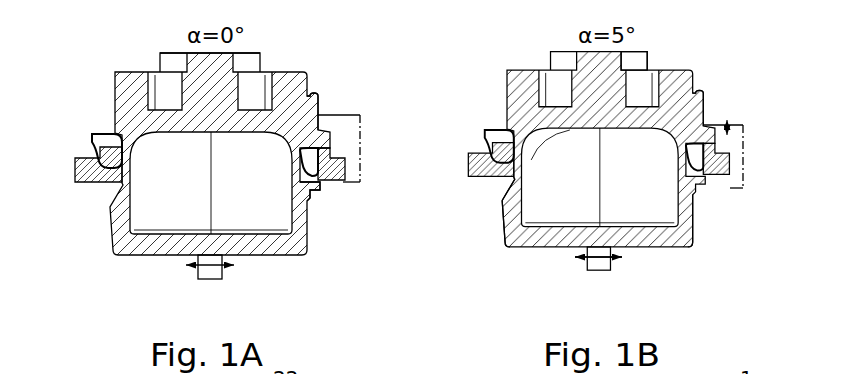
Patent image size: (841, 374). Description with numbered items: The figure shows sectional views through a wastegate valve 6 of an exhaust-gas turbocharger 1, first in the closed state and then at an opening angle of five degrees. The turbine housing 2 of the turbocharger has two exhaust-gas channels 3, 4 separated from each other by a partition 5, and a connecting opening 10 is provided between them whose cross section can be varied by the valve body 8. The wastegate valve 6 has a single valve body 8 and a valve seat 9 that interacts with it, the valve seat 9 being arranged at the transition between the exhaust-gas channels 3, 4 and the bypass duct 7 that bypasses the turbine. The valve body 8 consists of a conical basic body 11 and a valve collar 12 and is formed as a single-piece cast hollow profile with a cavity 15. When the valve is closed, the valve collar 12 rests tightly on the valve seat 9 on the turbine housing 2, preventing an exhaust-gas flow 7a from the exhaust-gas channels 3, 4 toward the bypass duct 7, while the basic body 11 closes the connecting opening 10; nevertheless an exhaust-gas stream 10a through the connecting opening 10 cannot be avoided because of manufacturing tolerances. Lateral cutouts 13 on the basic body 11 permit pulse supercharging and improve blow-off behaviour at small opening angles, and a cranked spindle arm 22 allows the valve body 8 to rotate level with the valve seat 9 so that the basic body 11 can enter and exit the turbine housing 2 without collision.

In FIG. 1A, the exhaust-gas turbocharger 1 is at (324, 80).
In FIG. 1B, the exhaust-gas turbocharger 1 is at (704, 62).
In FIG. 1A, the turbine housing 2 is at (76, 172).
In FIG. 1B, the turbine housing 2 is at (718, 174).
In FIG. 1A, the exhaust-gas channel 3 is at (125, 303).
In FIG. 1B, the exhaust-gas channel 3 is at (538, 283).
In FIG. 1A, the exhaust-gas channel 4 is at (296, 306).
In FIG. 1B, the exhaust-gas channel 4 is at (668, 283).
In FIG. 1A, the partition 5 is at (213, 273).
In FIG. 1B, the partition 5 is at (597, 277).
In FIG. 1A, the wastegate valve 6 is at (105, 107).
In FIG. 1B, the wastegate valve 6 is at (493, 107).
In FIG. 1A, the bypass duct 7 is at (349, 113).
In FIG. 1B, the bypass duct 7 is at (736, 124).
In FIG. 1B, the exhaust-gas flow 7a is at (728, 128).
In FIG. 1A, the valve body 8 is at (290, 69).
In FIG. 1B, the valve body 8 is at (497, 233).
In FIG. 1A, the valve seat 9 is at (92, 134).
In FIG. 1B, the valve seat 9 is at (692, 157).
In FIG. 1B, the connecting opening 10 is at (597, 262).
In FIG. 1A, the exhaust-gas stream 10a is at (195, 266).
In FIG. 1B, the exhaust-gas stream 10a is at (610, 260).
In FIG. 1B, the basic body 11 is at (688, 238).
In FIG. 1A, the valve collar 12 is at (130, 85).
In FIG. 1B, the valve collar 12 is at (680, 88).
In FIG. 1A, the lateral cutouts 13 is at (310, 192).
In FIG. 1B, the lateral cutouts 13 is at (498, 187).
In FIG. 1A, the cavity 15 is at (271, 200).
In FIG. 1B, the cavity 15 is at (599, 177).
In FIG. 1B, the cranked spindle arm 22 is at (634, 56).